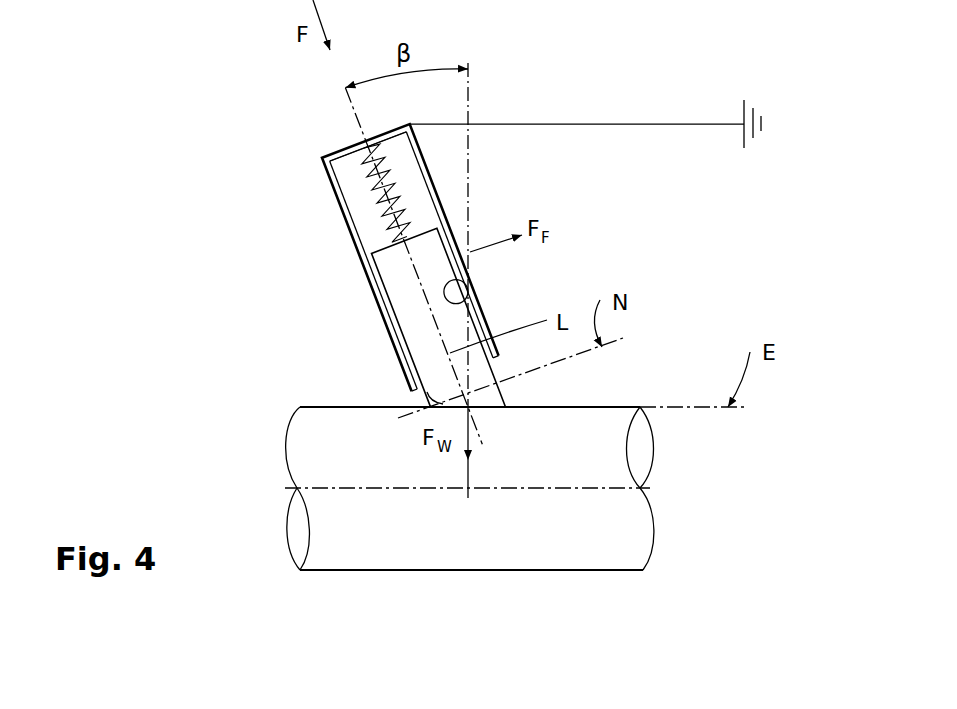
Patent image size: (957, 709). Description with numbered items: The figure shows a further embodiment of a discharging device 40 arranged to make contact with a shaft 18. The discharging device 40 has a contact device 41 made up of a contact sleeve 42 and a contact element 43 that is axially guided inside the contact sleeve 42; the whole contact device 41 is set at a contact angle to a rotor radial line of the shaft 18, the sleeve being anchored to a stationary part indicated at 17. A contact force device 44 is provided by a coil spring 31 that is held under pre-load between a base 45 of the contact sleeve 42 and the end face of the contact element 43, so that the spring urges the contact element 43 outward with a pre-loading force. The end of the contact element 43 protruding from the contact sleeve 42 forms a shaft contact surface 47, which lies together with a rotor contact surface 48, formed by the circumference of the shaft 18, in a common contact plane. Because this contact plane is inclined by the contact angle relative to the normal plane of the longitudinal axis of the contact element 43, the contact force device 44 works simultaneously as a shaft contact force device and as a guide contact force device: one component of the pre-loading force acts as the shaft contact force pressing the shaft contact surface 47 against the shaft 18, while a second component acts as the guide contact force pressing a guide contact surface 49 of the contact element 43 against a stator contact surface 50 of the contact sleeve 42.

The fixed frame / mount 17 is at (768, 115).
The shaft 18 is at (607, 463).
The coil spring 31 is at (375, 185).
The discharging device 40 is at (545, 115).
The contact device 41 is at (337, 242).
The contact sleeve 42 is at (373, 277).
The contact element 43 is at (415, 327).
The contact force device 44 is at (370, 207).
The base 45 is at (348, 152).
The shaft contact surface 47 is at (488, 407).
The rotor contact surface 48 is at (405, 380).
The guide contact surface 49 is at (448, 235).
The stator contact surface 50 is at (480, 300).